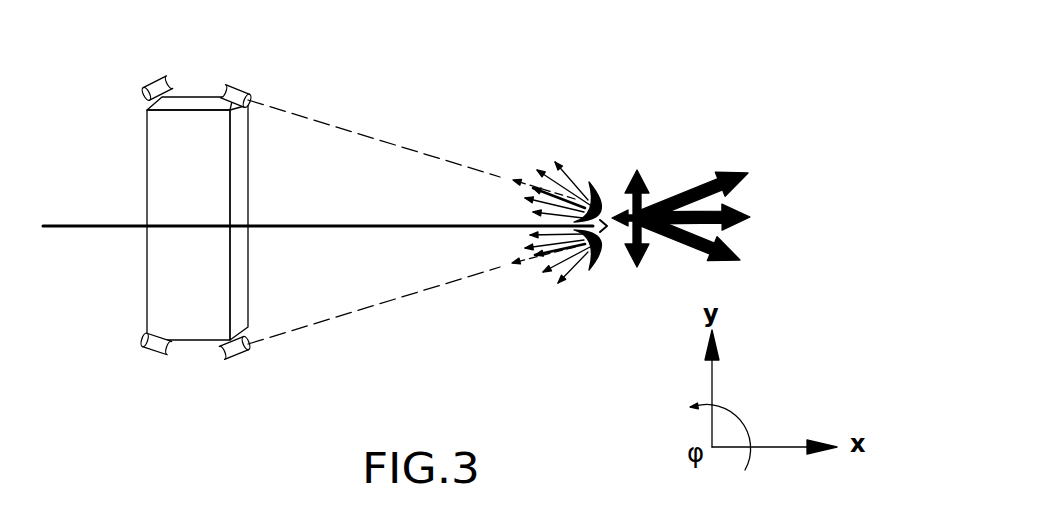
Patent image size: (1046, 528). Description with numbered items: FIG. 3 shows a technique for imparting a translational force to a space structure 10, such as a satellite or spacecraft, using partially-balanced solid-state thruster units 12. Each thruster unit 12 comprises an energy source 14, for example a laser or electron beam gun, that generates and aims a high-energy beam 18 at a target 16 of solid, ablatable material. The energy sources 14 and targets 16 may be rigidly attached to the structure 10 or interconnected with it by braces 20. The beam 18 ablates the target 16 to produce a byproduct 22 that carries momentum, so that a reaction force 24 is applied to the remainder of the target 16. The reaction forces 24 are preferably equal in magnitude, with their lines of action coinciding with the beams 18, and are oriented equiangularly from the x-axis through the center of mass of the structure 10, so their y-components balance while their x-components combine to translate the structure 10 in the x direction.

The space structure 10 is at (147, 125).
The thruster unit 12 is at (512, 322).
The energy source 14 is at (232, 88).
The target 16 is at (596, 182).
The high-energy beam 18 is at (347, 128).
The brace 20 is at (315, 227).
The byproduct 22 is at (548, 168).
The reaction force 24 is at (735, 252).